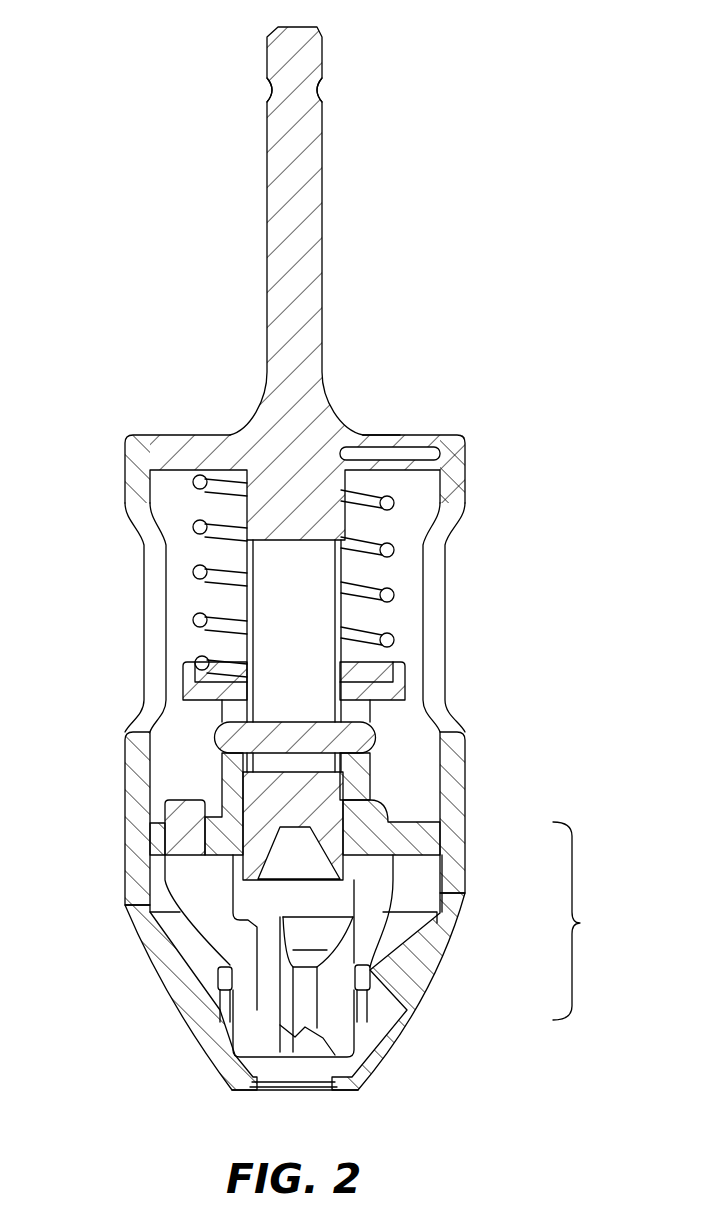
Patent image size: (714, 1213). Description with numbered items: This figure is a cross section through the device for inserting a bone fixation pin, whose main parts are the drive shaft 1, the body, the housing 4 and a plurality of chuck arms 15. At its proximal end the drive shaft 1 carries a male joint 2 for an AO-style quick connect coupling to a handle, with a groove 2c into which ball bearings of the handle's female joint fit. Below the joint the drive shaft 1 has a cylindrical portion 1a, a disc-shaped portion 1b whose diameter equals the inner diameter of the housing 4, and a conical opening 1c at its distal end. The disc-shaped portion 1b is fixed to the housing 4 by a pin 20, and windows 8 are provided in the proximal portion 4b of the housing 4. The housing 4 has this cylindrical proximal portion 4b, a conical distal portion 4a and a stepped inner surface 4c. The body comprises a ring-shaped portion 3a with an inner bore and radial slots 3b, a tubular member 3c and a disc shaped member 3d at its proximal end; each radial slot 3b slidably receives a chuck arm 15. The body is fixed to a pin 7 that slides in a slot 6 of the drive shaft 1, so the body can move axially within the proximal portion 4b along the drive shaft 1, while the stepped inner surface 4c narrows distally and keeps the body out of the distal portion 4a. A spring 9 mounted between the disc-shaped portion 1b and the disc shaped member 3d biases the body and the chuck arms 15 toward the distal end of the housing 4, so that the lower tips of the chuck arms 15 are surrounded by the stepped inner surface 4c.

The male joint 2 is at (190, 114).
The drive shaft 1 is at (323, 258).
The groove 2c is at (320, 90).
The cylindrical portion 1a is at (277, 510).
The disc-shaped portion 1b is at (377, 434).
The pin 20 is at (410, 452).
The windows 8 is at (444, 540).
The slot 6 is at (300, 565).
The spring 9 is at (357, 548).
The second disc shaped member 3d is at (183, 685).
The pin 7 is at (373, 737).
The tubular member 3c is at (373, 772).
The ring-shaped portion 3a is at (410, 820).
The radial slots 3b is at (224, 842).
The conical opening 1c is at (297, 866).
The proximal portion 4b is at (467, 838).
The distal portion 4a is at (440, 970).
The stepped inner surface 4c is at (416, 1007).
The chuck arms 15 is at (300, 1045).
The housing 4 is at (577, 921).